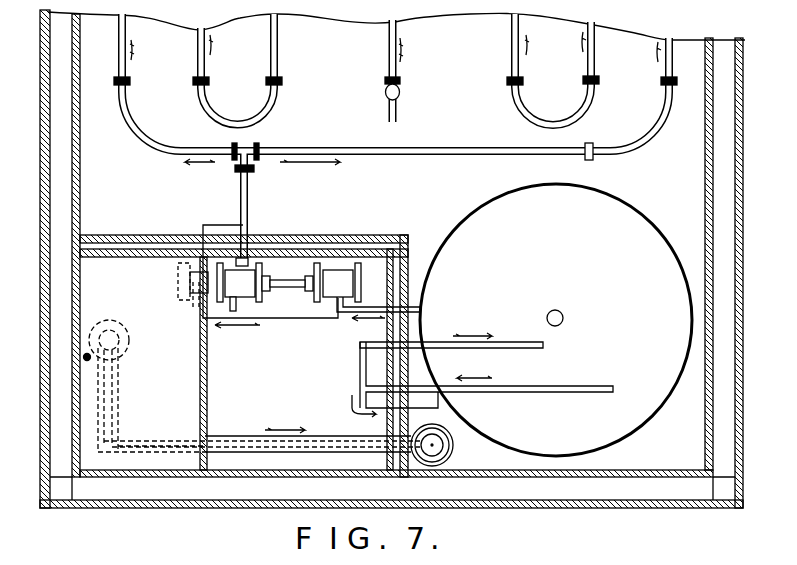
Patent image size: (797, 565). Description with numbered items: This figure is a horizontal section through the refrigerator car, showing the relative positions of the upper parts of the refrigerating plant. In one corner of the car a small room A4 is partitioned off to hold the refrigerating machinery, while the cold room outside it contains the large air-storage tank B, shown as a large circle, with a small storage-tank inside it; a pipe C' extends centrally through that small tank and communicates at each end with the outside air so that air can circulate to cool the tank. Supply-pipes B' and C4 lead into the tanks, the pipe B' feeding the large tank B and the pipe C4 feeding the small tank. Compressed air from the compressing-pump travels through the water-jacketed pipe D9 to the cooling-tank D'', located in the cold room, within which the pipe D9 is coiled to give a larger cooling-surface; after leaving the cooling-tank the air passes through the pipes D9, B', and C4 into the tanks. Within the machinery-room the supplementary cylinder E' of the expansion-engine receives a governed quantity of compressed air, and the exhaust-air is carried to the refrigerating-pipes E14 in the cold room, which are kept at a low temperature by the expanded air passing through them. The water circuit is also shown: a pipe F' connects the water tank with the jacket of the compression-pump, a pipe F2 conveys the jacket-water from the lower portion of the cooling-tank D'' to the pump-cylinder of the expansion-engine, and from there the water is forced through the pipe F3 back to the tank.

The refrigerating-pipes E14 is at (202, 108).
The supplementary cylinder E' is at (245, 282).
The pipe F3 is at (295, 320).
The pipe F2 is at (367, 307).
The pipe F' is at (252, 386).
The small room A4 is at (396, 356).
The pipe D9 is at (222, 440).
The cooling-tank D'' is at (455, 445).
The supply-pipe B' is at (482, 379).
The supply-pipe C4 is at (516, 349).
The pipe C' is at (569, 308).
The large air-storage tank B is at (556, 320).